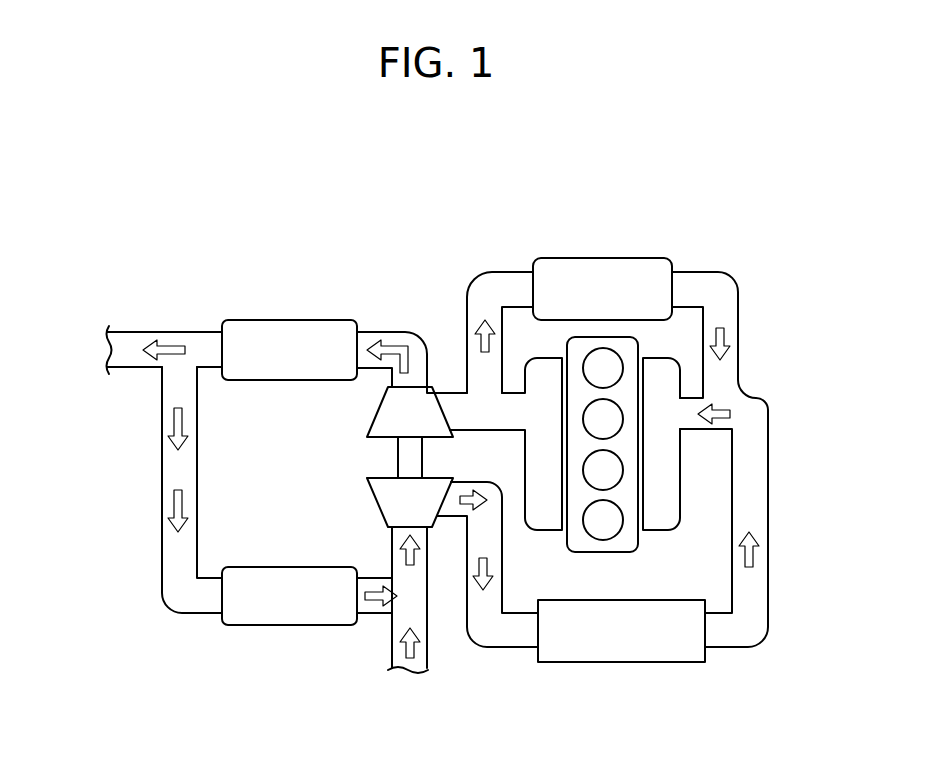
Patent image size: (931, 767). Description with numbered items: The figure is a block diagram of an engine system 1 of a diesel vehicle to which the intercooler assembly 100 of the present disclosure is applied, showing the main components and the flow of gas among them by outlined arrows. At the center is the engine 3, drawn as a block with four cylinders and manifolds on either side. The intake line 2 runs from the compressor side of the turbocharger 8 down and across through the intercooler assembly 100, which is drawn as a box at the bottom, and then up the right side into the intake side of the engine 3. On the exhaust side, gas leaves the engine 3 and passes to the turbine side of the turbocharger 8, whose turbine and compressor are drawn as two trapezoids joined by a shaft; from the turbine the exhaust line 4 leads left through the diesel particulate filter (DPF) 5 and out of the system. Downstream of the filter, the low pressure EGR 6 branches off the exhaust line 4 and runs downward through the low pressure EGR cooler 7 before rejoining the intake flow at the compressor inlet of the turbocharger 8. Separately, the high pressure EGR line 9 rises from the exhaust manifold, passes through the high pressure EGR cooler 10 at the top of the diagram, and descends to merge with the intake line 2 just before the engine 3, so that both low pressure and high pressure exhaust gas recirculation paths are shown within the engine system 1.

The engine system 1 is at (243, 177).
The intake line 2 is at (475, 643).
The engine 3 is at (652, 546).
The exhaust line 4 is at (136, 338).
The diesel particulate filter (DPF) 5 is at (290, 325).
The low pressure EGR 6 is at (168, 556).
The low pressure EGR cooler 7 is at (285, 622).
The turbocharger 8 is at (345, 457).
The high pressure EGR line 9 is at (469, 285).
The high pressure EGR cooler 10 is at (608, 268).
The intercooler assembly 100 is at (632, 680).